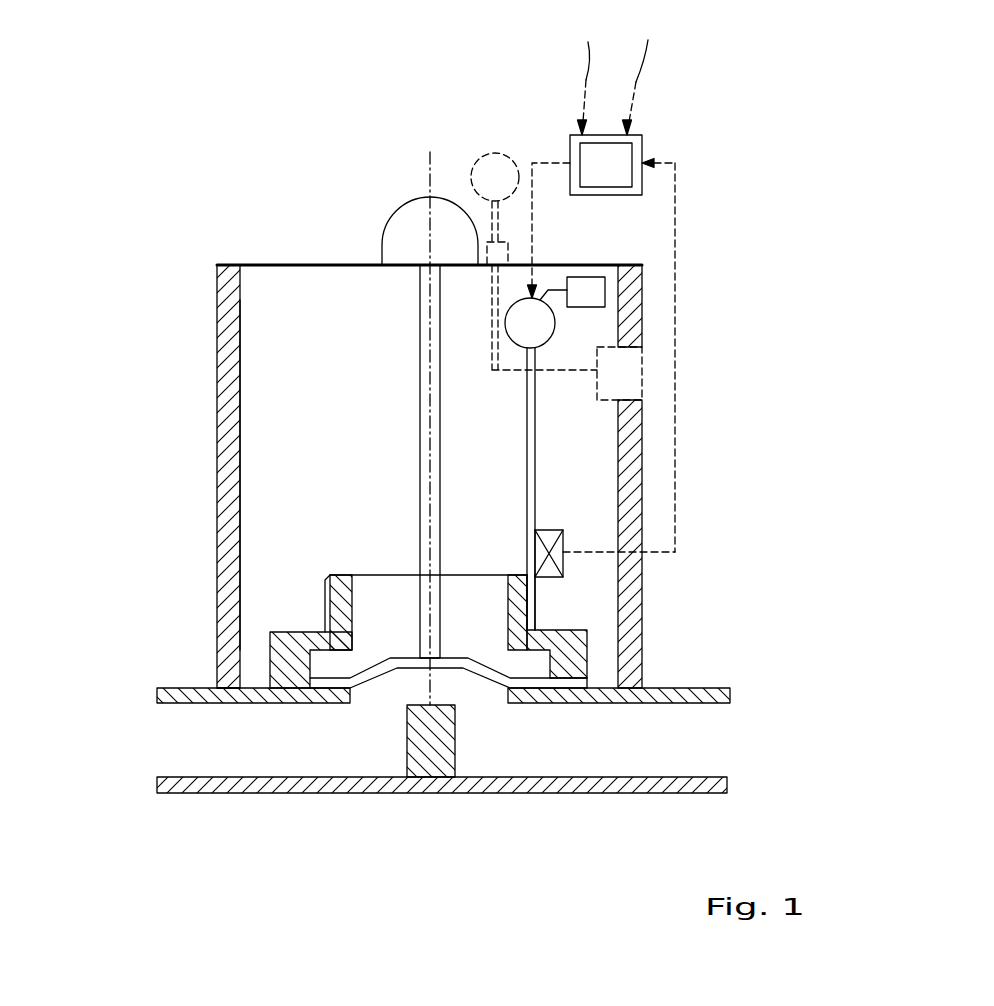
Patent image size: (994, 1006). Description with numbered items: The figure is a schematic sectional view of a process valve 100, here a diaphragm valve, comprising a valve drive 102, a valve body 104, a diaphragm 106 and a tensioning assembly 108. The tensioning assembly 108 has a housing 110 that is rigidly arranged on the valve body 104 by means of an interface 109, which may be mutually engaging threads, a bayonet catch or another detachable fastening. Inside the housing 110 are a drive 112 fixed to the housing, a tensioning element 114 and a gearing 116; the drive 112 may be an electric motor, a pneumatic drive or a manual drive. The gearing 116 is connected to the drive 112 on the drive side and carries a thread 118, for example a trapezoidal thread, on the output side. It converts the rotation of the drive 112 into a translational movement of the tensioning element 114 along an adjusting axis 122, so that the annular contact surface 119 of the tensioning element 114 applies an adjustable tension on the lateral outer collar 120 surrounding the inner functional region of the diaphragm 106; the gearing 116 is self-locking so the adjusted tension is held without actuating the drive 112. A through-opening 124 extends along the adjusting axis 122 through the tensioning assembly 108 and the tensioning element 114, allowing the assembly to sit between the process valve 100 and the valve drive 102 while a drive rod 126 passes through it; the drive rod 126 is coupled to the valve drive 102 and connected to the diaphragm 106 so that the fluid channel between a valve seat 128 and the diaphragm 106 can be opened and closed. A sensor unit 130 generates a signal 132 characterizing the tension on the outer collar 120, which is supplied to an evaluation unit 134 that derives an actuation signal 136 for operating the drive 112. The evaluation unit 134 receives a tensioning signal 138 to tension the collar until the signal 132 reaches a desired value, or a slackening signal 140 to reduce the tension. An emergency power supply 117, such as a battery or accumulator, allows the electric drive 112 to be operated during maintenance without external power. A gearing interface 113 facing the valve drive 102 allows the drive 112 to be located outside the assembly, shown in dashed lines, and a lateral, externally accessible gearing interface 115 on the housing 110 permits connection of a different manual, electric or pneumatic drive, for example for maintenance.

The process valve 100 is at (377, 732).
The valve drive 102 is at (382, 238).
The valve body 104 is at (175, 688).
The diaphragm 106 is at (287, 686).
The tensioning assembly 108 is at (217, 430).
The interface 109 is at (207, 680).
The housing 110 is at (240, 490).
The drive 112 is at (494, 153).
The gearing interface 113 is at (487, 243).
The tensioning element 114 is at (518, 613).
The gearing interface 115 is at (623, 377).
The gearing 116 is at (535, 443).
The emergency power supply 117 is at (605, 290).
The thread 118 is at (535, 595).
The annular contact surface 119 is at (580, 688).
The lateral outer collar 120 is at (565, 678).
The adjusting axis 122 is at (420, 392).
The through-opening 124 is at (375, 600).
The drive rod 126 is at (420, 320).
The valve seat 128 is at (447, 720).
The sensor unit 130 is at (565, 540).
The signal 132 is at (675, 353).
The evaluation unit 134 is at (642, 187).
The actuation signal 136 is at (532, 225).
The tensioning signal 138 is at (647, 73).
The slackening signal 140 is at (587, 73).